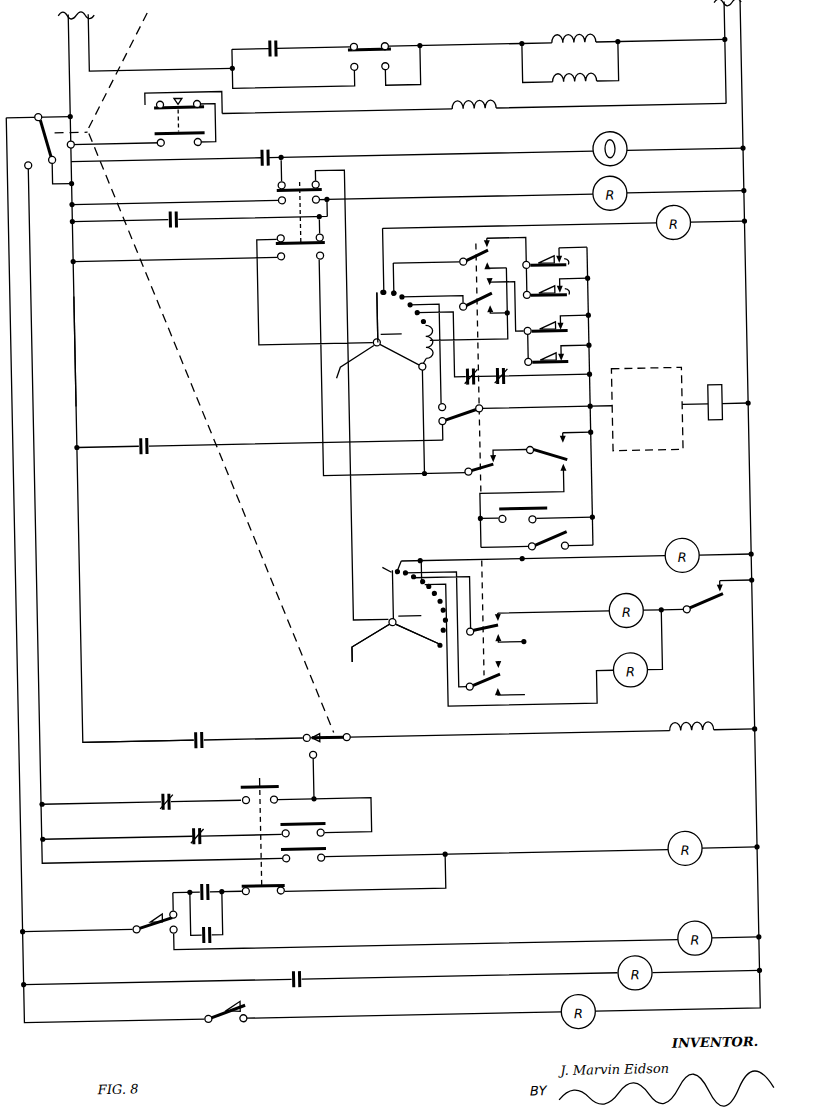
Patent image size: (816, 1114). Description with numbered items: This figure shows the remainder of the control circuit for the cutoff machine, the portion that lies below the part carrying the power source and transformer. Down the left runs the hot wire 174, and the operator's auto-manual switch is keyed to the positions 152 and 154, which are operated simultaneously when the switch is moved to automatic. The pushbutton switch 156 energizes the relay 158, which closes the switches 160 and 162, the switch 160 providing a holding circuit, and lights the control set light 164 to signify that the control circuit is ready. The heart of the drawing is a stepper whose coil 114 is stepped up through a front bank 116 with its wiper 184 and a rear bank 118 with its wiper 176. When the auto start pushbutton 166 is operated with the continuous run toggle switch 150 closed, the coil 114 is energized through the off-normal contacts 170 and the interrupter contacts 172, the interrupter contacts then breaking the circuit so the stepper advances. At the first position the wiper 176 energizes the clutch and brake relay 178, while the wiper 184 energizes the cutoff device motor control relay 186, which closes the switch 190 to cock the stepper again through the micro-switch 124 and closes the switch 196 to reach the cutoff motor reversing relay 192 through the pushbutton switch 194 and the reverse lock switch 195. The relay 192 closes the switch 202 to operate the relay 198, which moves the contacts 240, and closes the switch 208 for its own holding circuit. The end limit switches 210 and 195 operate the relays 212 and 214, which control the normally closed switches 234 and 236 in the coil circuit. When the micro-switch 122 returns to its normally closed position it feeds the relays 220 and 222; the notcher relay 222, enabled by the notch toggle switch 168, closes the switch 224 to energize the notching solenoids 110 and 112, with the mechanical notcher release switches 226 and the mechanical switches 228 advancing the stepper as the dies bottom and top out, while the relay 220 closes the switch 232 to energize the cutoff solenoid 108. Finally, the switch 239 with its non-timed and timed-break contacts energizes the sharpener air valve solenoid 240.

The solenoid 108 is at (688, 742).
The solenoid 110 is at (560, 38).
The solenoid 112 is at (604, 86).
The coil 114 is at (712, 391).
The front bank 116 is at (423, 373).
The rear bank 118 is at (482, 631).
The micro-switch 122 is at (709, 618).
The micro-switch 124 is at (451, 415).
The continuous run toggle switch 150 is at (569, 538).
The switch 152 is at (48, 164).
The switch 154 is at (327, 730).
The pushbutton switch 156 is at (268, 223).
The relay 158 is at (597, 193).
The switch 160 is at (182, 221).
The switch 162 is at (268, 162).
The control set light 164 is at (598, 147).
The auto start pushbutton 166 is at (542, 515).
The notch toggle switch 168 is at (472, 279).
The off-normal contacts 170 is at (537, 489).
The interrupter contacts 172 is at (463, 481).
The hot wire 174 is at (77, 328).
The wiper 176 is at (382, 629).
The clutch and brake relay 178 is at (694, 547).
The wiper 184 is at (378, 299).
The cutoff device motor control relay 186 is at (668, 242).
The switch 190 is at (145, 458).
The cutoff motor reversing relay 192 is at (664, 868).
The pushbutton switch 194 is at (246, 816).
The reverse lock switch 195 is at (119, 933).
The switch 196 is at (202, 915).
The relay 198 is at (606, 969).
The switch 202 is at (280, 967).
The switch 208 is at (184, 882).
The end limit switch 210 is at (230, 1016).
The relay 212 is at (582, 1020).
The relay 214 is at (668, 933).
The relay 220 is at (644, 684).
The notcher relay 222 is at (609, 629).
The switch 224 is at (278, 40).
The mechanical notcher release switches 226 is at (556, 272).
The mechanical switches 228 is at (558, 339).
The switch 232 is at (195, 721).
The switch 234 is at (480, 384).
The switch 236 is at (512, 383).
The switch 239 is at (232, 125).
The sharpener air valve solenoid 240 is at (490, 116).